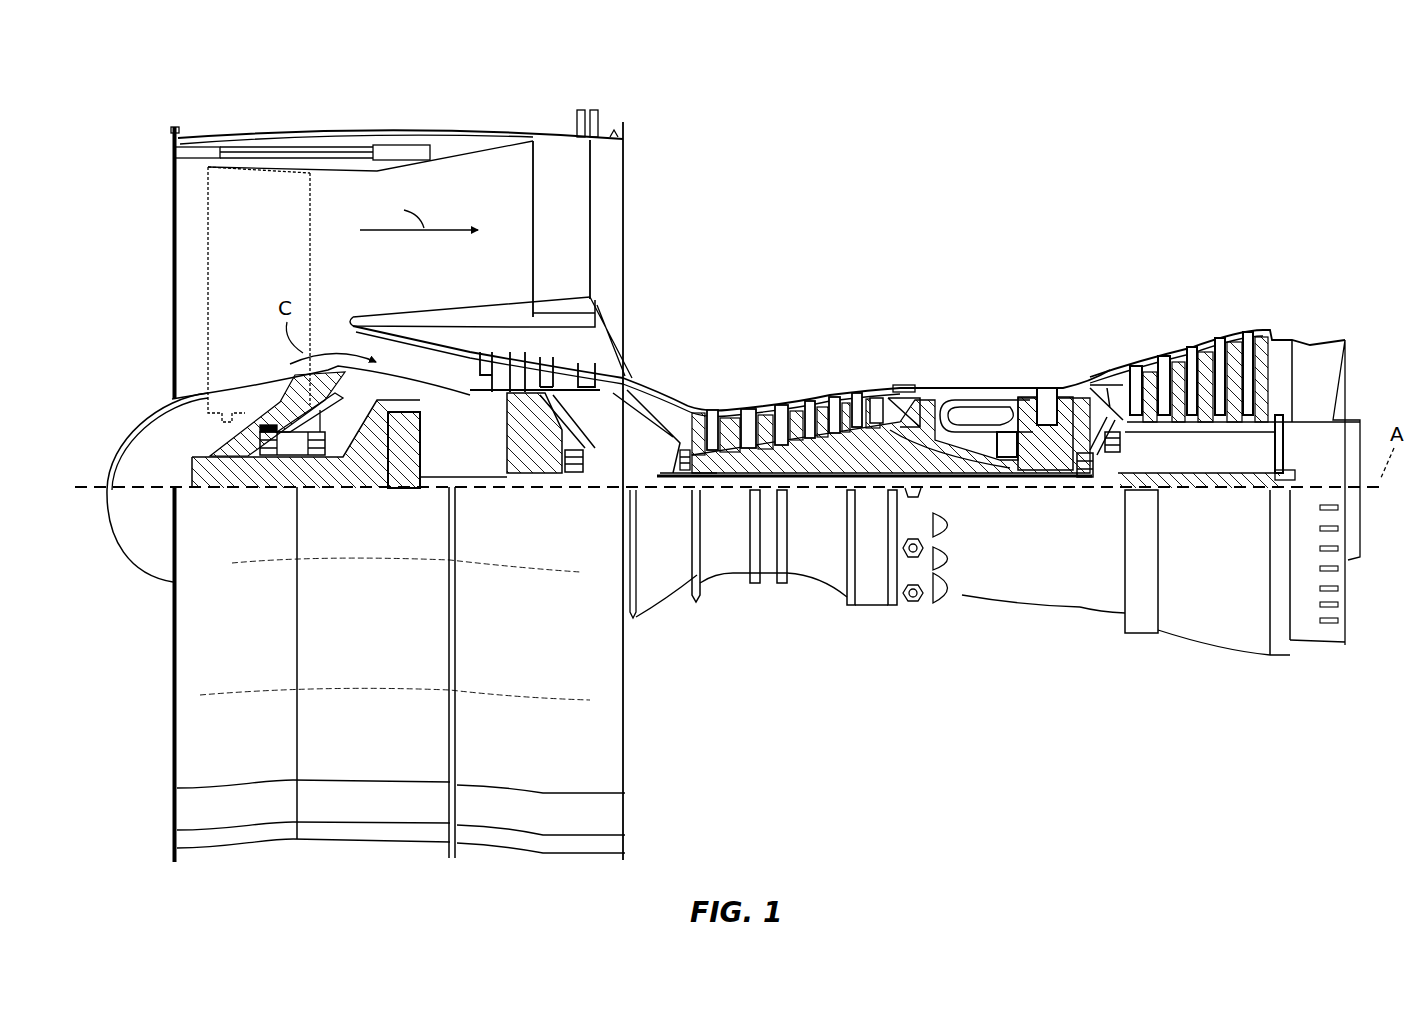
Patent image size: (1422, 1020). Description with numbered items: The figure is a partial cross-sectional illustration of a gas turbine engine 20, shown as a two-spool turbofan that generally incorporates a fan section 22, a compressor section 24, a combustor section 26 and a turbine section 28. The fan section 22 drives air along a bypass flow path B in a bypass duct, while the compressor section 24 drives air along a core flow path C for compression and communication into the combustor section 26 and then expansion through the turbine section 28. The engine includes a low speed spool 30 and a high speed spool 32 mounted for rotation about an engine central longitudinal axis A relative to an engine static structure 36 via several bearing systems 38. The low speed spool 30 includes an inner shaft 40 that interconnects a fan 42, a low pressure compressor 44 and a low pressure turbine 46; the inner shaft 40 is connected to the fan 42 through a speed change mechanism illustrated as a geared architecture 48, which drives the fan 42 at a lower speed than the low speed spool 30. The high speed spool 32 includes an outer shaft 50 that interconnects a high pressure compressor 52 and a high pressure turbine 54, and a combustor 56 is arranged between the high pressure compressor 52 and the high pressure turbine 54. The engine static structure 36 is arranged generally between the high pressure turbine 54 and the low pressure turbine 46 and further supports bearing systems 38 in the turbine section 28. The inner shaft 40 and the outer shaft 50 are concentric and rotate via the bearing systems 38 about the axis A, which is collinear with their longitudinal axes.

The gas turbine engine 20 is at (1224, 146).
The fan section 22 is at (279, 128).
The compressor section 24 is at (796, 304).
The combustor section 26 is at (983, 284).
The turbine section 28 is at (1131, 278).
The low speed spool 30 is at (834, 496).
The high speed spool 32 is at (883, 447).
The engine static structure 36 is at (877, 608).
The bearing systems 38 is at (268, 445).
The inner shaft 40 is at (644, 490).
The fan 42 is at (268, 277).
The low pressure compressor 44 is at (543, 368).
The low pressure turbine 46 is at (1205, 352).
The geared architecture 48 is at (397, 470).
The outer shaft 50 is at (995, 488).
The high pressure compressor 52 is at (787, 457).
The high pressure turbine 54 is at (1043, 385).
The combustor 56 is at (968, 410).